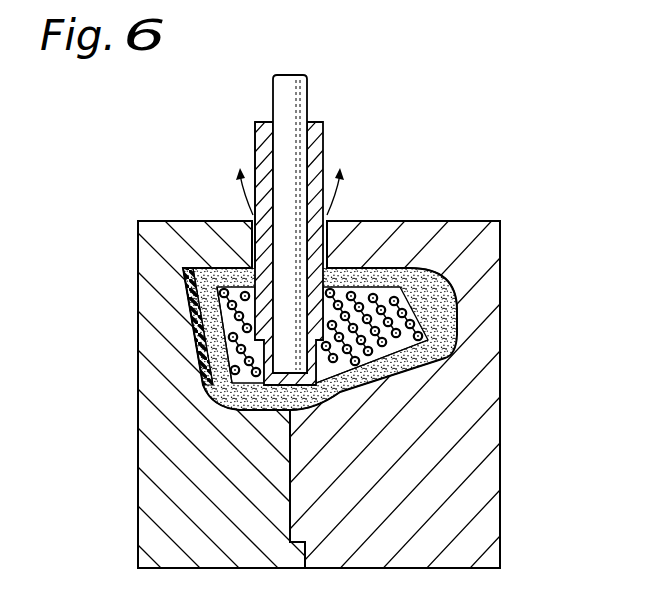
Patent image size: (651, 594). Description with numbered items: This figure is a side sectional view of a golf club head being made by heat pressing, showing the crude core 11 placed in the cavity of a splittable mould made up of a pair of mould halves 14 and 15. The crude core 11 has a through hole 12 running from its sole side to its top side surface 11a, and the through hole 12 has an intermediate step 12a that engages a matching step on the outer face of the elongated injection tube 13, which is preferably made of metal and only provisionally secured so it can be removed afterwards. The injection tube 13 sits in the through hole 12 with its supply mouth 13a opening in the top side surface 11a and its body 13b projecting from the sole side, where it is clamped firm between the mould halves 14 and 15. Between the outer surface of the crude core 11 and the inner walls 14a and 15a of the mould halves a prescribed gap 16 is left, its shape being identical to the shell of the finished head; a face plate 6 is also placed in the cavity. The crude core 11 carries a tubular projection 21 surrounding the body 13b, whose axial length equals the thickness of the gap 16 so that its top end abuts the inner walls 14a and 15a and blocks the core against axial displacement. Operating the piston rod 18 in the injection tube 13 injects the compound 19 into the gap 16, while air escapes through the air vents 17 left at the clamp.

The face plate 6 is at (192, 346).
The crude core 11 is at (382, 270).
The top side surface 11a is at (432, 368).
The through hole 12 is at (352, 268).
The intermediate step 12a is at (212, 318).
The injection tube 13 is at (255, 150).
The supply mouth 13a is at (200, 366).
The body 13b is at (256, 242).
The mould half 14 is at (482, 525).
The inner wall 14a is at (445, 302).
The mould half 15 is at (167, 513).
The inner wall 15a is at (187, 270).
The gap 16 is at (240, 410).
The air vent 17 is at (327, 216).
The piston rod 18 is at (273, 100).
The compound 19 is at (423, 270).
The tubular projection 21 is at (183, 282).